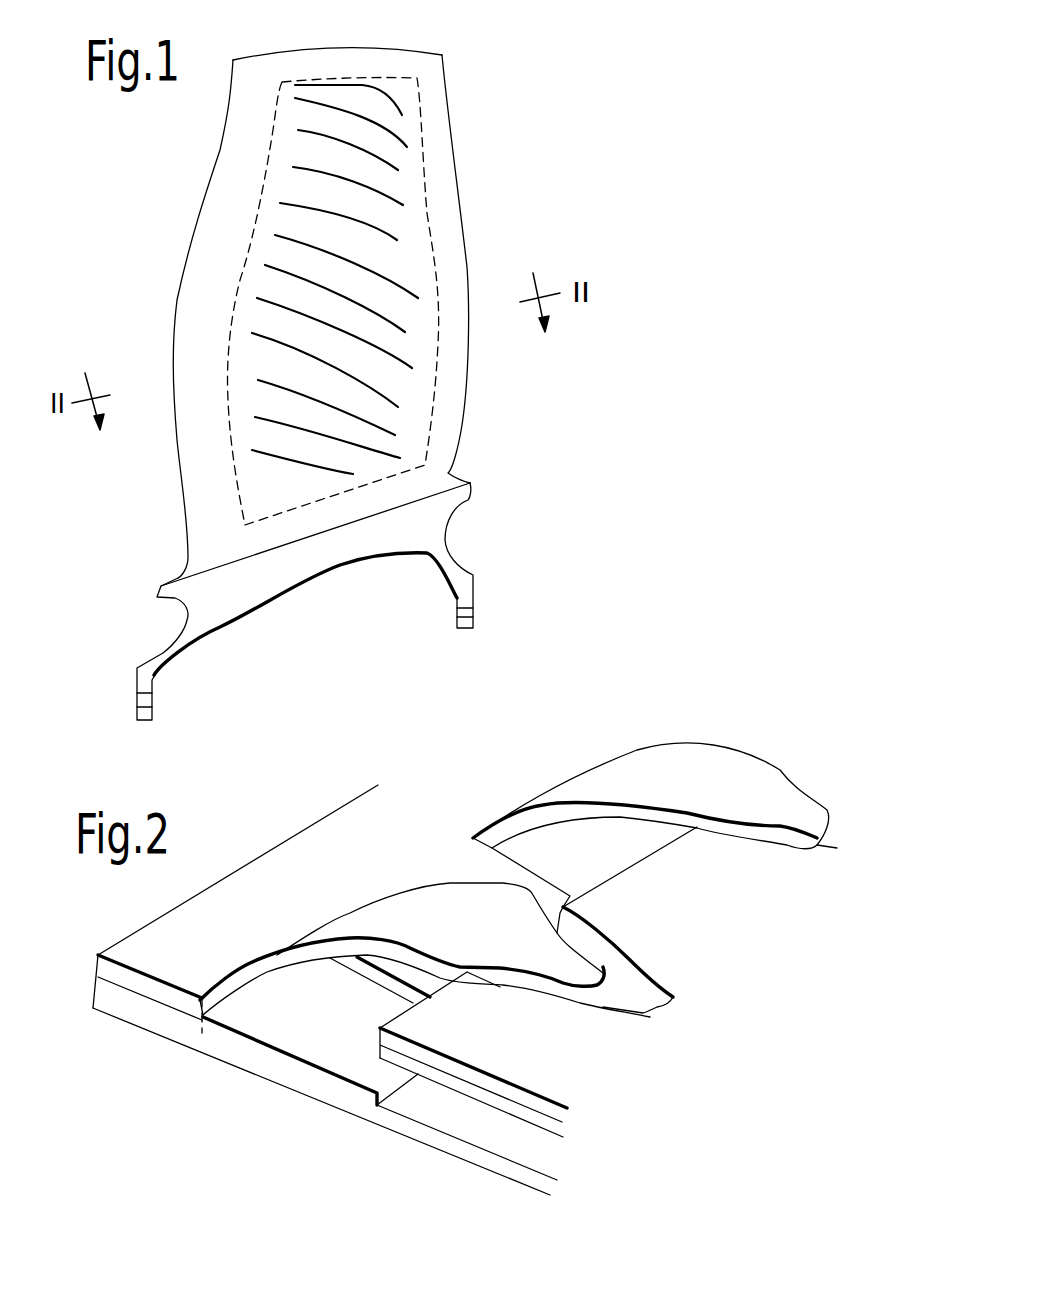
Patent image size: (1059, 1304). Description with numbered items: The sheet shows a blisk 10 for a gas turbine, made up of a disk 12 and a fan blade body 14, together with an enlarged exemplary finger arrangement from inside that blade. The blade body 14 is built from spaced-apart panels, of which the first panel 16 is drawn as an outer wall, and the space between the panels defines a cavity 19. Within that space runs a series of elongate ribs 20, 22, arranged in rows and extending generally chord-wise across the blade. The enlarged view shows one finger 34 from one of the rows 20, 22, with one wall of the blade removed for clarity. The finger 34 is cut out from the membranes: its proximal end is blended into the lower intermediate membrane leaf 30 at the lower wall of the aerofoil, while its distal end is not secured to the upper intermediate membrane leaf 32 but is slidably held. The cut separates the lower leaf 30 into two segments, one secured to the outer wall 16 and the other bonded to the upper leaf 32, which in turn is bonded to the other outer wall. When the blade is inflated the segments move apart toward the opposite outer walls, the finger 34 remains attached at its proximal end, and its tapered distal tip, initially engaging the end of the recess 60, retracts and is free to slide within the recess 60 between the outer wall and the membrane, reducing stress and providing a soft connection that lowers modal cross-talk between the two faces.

In FIG. 1, the blisk 10 is at (466, 113).
In FIG. 1, the disk 12 is at (267, 600).
In FIG. 1, the fan blade body 14 is at (202, 197).
In FIG. 1, the elongate ribs 20 is at (293, 86).
In FIG. 1, the elongate ribs 22 is at (368, 112).
In FIG. 2, the lower intermediate membrane leaf 30 is at (108, 990).
In FIG. 2, the upper intermediate membrane leaf 32 is at (128, 950).
In FIG. 2, the finger 34 is at (417, 910).
In FIG. 2, the cavity 19 is at (357, 957).
In FIG. 2, the first panel 16 is at (372, 1112).
In FIG. 2, the recess 60 is at (657, 1007).